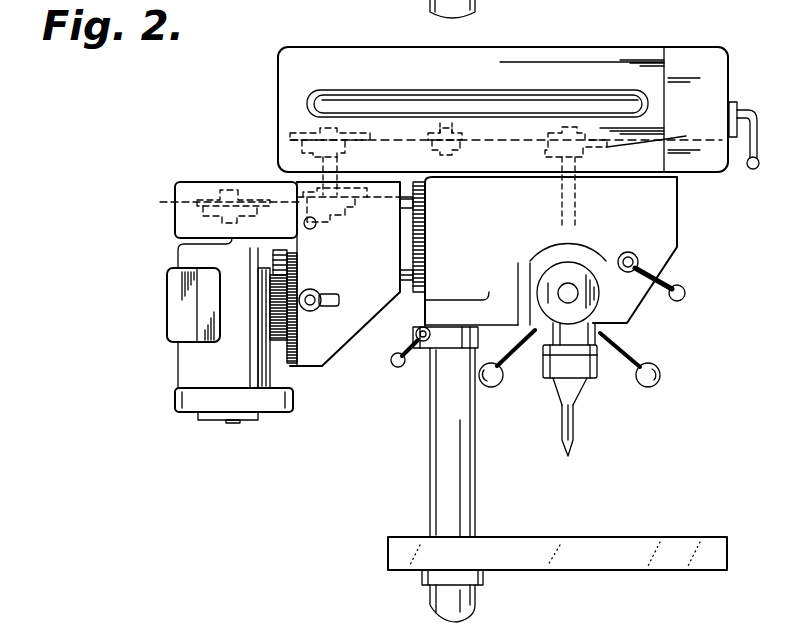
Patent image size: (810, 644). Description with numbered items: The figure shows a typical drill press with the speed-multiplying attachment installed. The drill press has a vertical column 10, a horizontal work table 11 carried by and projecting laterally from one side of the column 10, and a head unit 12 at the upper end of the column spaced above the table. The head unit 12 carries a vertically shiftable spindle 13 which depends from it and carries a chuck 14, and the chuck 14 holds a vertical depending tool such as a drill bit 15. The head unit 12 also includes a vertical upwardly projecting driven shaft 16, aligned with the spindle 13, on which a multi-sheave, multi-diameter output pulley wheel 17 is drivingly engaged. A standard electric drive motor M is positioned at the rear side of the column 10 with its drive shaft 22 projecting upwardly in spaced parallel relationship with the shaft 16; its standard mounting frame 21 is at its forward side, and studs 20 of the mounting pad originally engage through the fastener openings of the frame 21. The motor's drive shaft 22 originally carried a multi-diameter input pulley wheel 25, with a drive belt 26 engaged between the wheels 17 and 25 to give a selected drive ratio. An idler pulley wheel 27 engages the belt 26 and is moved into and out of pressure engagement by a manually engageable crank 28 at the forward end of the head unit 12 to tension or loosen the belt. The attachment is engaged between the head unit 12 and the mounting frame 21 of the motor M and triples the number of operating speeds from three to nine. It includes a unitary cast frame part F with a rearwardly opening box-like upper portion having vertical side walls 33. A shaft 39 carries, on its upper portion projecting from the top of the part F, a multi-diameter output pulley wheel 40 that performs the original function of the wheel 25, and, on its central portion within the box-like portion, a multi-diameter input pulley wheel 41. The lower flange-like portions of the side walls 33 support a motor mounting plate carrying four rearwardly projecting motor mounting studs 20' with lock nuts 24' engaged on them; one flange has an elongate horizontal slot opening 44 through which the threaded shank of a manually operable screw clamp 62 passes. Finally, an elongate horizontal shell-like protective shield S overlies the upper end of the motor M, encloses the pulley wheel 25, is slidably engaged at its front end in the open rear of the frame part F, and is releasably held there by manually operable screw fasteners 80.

The vertical column 10 is at (475, 490).
The horizontal work table 11 is at (683, 537).
The head unit 12 is at (672, 212).
The spindle 13 is at (597, 375).
The chuck 14 is at (578, 440).
The drill bit 15 is at (637, 353).
The driven shaft 16 is at (570, 127).
The output pulley wheel 17 is at (686, 136).
The studs 20 is at (442, 237).
The motor mounting studs 20' is at (250, 308).
The mounting frame 21 is at (268, 302).
The drive shaft 22 is at (180, 250).
The lock nuts 24' is at (245, 328).
The input pulley wheel 25 is at (170, 200).
The drive belt 26 is at (390, 138).
The idler pulley wheel 27 is at (462, 133).
The crank 28 is at (754, 170).
The side walls 33 is at (366, 298).
The shaft 39 is at (298, 180).
The output pulley wheel 40 is at (290, 128).
The input pulley wheel 41 is at (351, 197).
The slot opening 44 is at (358, 298).
The screw clamp 62 is at (338, 305).
The screw fasteners 80 is at (306, 218).
The protective shield S is at (172, 217).
The electric drive motor M is at (186, 353).
The frame part F is at (378, 246).